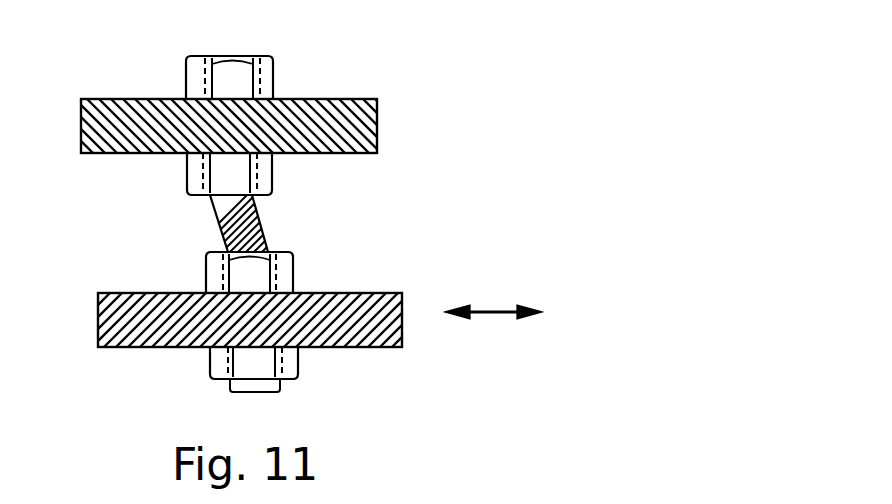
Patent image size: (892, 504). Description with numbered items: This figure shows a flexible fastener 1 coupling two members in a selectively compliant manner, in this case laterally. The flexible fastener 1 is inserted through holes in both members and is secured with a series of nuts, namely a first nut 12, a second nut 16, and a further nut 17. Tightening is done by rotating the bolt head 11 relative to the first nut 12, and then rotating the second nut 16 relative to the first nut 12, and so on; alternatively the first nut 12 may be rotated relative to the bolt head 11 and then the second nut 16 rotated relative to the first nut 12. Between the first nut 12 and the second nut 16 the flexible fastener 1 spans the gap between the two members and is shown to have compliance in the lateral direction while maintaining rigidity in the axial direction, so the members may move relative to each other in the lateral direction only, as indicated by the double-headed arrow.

The flexible fastener 1 is at (265, 218).
The bolt head 11 is at (262, 56).
The first nut 12 is at (272, 172).
The second nut 16 is at (293, 268).
The nut 17 is at (298, 375).